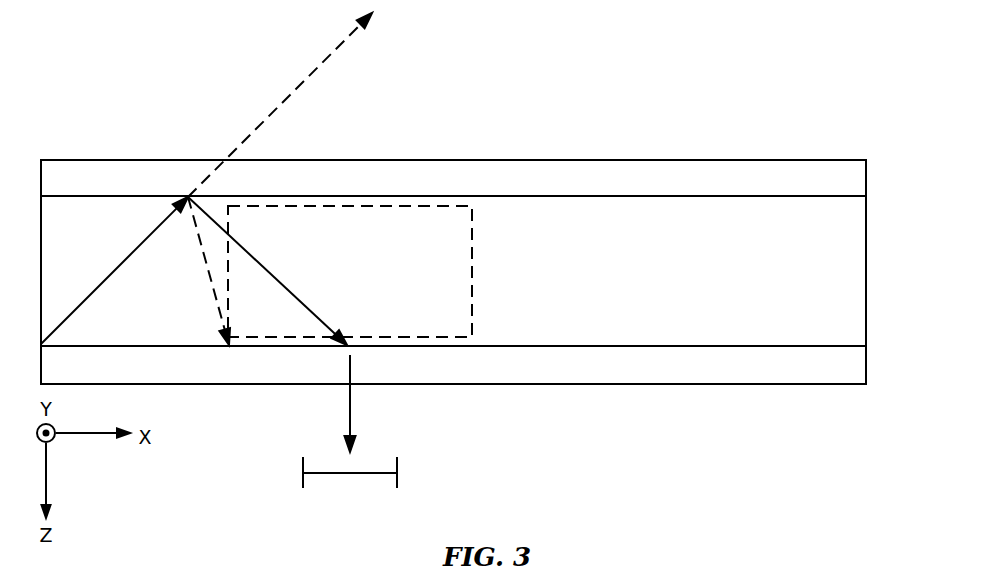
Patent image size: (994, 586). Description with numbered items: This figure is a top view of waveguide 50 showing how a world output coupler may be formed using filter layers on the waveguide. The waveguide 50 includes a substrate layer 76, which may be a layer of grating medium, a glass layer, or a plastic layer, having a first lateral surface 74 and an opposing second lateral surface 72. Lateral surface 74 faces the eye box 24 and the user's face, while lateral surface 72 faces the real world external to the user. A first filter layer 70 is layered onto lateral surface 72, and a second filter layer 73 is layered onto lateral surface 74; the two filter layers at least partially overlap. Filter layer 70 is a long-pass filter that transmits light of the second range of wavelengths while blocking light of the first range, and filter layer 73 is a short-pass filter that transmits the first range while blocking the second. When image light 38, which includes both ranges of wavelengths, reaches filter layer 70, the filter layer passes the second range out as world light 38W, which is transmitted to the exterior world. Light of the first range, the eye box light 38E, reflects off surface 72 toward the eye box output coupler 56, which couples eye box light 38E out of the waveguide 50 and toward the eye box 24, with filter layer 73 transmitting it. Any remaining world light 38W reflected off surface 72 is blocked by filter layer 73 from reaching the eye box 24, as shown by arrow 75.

The waveguide 50 is at (774, 120).
The filter layer 70 is at (546, 160).
The second lateral surface 72 is at (655, 203).
The first lateral surface 74 is at (598, 340).
The filter layer 73 is at (688, 384).
The substrate layer 76 is at (855, 268).
The eye box output coupler 56 is at (474, 272).
The image light 38 is at (92, 296).
The eye box light 38E is at (256, 256).
The arrow 75 is at (210, 281).
The world light 38W is at (334, 55).
The eye box 24 is at (398, 474).